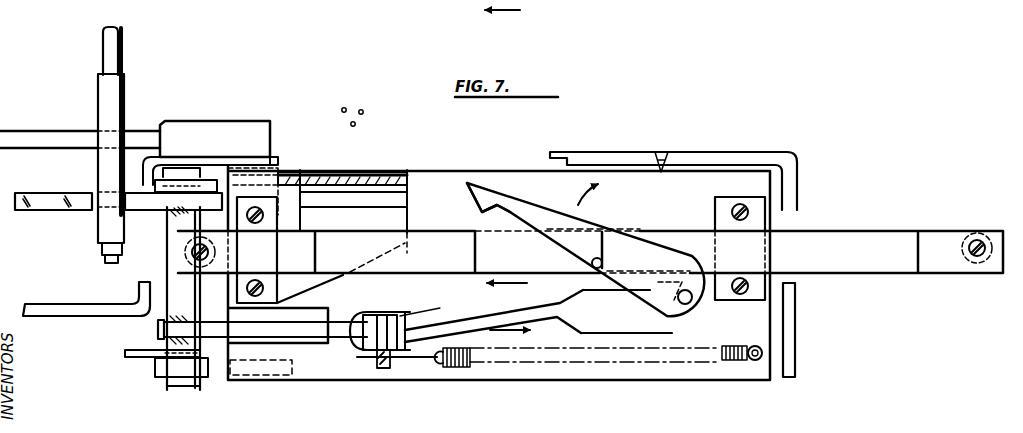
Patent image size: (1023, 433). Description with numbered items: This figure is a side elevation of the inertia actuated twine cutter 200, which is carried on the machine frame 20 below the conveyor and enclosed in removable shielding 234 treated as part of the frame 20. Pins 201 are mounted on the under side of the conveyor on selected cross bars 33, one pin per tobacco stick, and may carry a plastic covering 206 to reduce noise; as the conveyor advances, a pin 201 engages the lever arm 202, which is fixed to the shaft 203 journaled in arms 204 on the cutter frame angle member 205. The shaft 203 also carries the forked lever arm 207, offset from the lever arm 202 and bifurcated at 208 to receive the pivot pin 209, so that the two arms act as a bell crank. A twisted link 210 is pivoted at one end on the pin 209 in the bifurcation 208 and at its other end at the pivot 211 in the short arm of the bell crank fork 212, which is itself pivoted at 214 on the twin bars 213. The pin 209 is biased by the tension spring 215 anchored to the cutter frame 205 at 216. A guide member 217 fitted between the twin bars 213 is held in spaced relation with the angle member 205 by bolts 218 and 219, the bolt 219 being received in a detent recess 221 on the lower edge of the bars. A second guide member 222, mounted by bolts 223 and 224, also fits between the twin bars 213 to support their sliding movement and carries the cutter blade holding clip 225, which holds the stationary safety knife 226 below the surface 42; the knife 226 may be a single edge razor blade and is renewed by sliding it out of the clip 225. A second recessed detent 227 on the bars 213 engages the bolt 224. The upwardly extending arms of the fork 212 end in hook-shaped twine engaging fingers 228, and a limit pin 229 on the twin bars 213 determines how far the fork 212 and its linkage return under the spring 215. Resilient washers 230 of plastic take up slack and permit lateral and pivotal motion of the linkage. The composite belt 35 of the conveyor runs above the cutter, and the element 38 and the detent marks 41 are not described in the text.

The frame 20 is at (82, 305).
The cross bar 33 is at (62, 132).
The composite belt 35 is at (218, 128).
The rod 38 is at (108, 52).
The detent dots 41 is at (362, 122).
The surface 42 is at (276, 160).
The inertia actuated twine cutter 200 is at (851, 136).
The pin 201 is at (108, 172).
The lever arm 202 is at (66, 211).
The shaft 203 is at (178, 222).
The arm 204 is at (212, 186).
The cutter frame angle member 205 is at (428, 170).
The renewable covering 206 is at (114, 98).
The forked lever arm 207 is at (163, 326).
The bifurcation 208 is at (410, 312).
The pivot pin 209 is at (385, 310).
The twisted link 210 is at (520, 318).
The pivot 211 is at (677, 297).
The bell crank fork 212 is at (690, 265).
The twin bars 213 is at (318, 232).
The pivot 214 is at (640, 245).
The tension spring 215 is at (672, 350).
The anchor 216 is at (760, 344).
The guide member 217 is at (716, 205).
The bolt 218 is at (740, 204).
The bolt 219 is at (742, 301).
The detent recess 221 is at (740, 272).
The guide member 222 is at (398, 215).
The bolt 223 is at (254, 224).
The bolt 224 is at (260, 284).
The cutter blade holding clip 225 is at (392, 192).
The stationary safety knife 226 is at (366, 180).
The recessed detent 227 is at (400, 275).
The twine engaging finger 228 is at (490, 192).
The limit pin 229 is at (590, 265).
The resilient washer 230 is at (405, 316).
The shield 234 is at (738, 152).